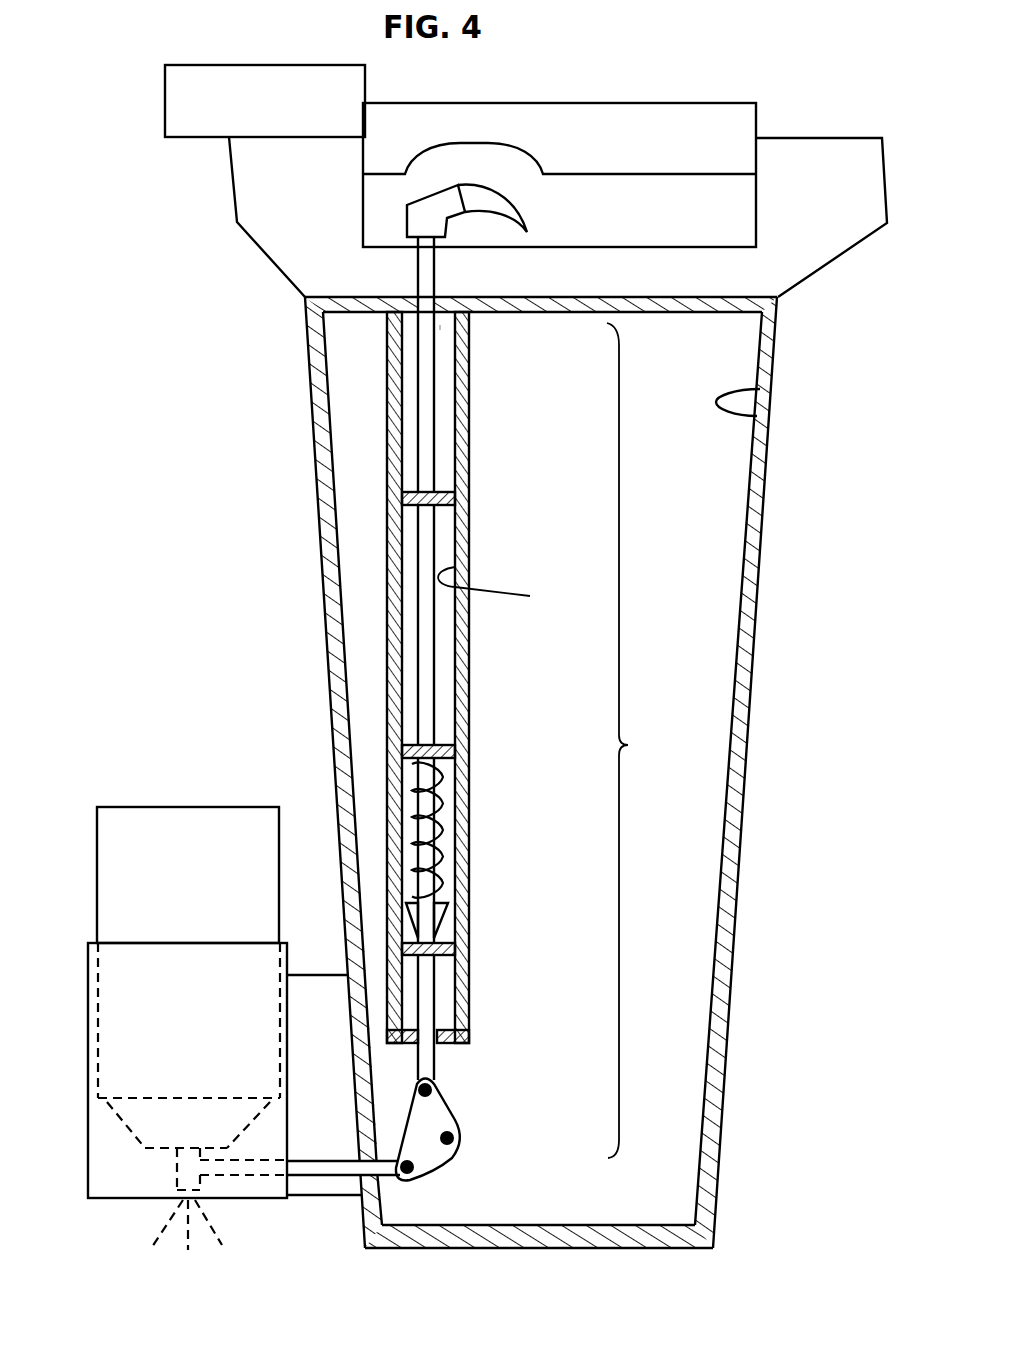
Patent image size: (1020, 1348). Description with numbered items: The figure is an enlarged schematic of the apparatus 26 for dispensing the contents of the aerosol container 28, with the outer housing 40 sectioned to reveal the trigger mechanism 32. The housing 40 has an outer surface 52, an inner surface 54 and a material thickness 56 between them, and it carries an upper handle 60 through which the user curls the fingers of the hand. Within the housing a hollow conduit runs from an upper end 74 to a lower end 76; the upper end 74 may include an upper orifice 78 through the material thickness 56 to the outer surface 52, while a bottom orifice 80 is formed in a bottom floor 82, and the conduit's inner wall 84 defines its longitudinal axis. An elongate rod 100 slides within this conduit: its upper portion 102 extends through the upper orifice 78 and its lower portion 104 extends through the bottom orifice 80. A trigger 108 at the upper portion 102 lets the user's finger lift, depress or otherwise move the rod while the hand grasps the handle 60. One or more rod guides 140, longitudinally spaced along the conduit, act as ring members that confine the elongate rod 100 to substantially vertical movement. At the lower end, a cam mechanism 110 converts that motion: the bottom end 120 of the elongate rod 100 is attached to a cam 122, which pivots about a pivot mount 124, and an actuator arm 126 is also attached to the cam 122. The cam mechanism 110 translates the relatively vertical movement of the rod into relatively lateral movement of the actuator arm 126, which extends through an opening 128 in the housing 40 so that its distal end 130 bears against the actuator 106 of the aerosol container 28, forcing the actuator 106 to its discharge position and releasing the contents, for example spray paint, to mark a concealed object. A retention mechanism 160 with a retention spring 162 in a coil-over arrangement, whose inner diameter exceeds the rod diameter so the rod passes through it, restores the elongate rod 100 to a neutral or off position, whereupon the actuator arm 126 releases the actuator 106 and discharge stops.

The apparatus 26 is at (178, 540).
The aerosol container 28 is at (132, 807).
The trigger mechanism 32 is at (635, 740).
The outer housing 40 is at (577, 772).
The outer surface 52 is at (772, 423).
The inner surface 54 is at (770, 390).
The material thickness 56 is at (700, 455).
The upper handle 60 is at (680, 135).
The upper end 74 is at (387, 347).
The lower end 76 is at (470, 935).
The upper orifice 78 is at (443, 329).
The bottom orifice 80 is at (447, 1049).
The bottom floor 82 is at (470, 1028).
The inner wall 84 is at (497, 587).
The elongate rod 100 is at (392, 590).
The upper portion 102 is at (425, 345).
The lower portion 104 is at (425, 978).
The actuator 106 is at (177, 1170).
The trigger 108 is at (525, 212).
The cam mechanism 110 is at (497, 1124).
The bottom end 120 is at (427, 1068).
The cam 122 is at (458, 1112).
The pivot mount 124 is at (455, 1138).
The actuator arm 126 is at (308, 1167).
The opening 128 is at (352, 1187).
The distal end 130 is at (210, 1168).
The rod guide 140 is at (498, 736).
The retention mechanism 160 is at (493, 847).
The retention spring 162 is at (526, 903).